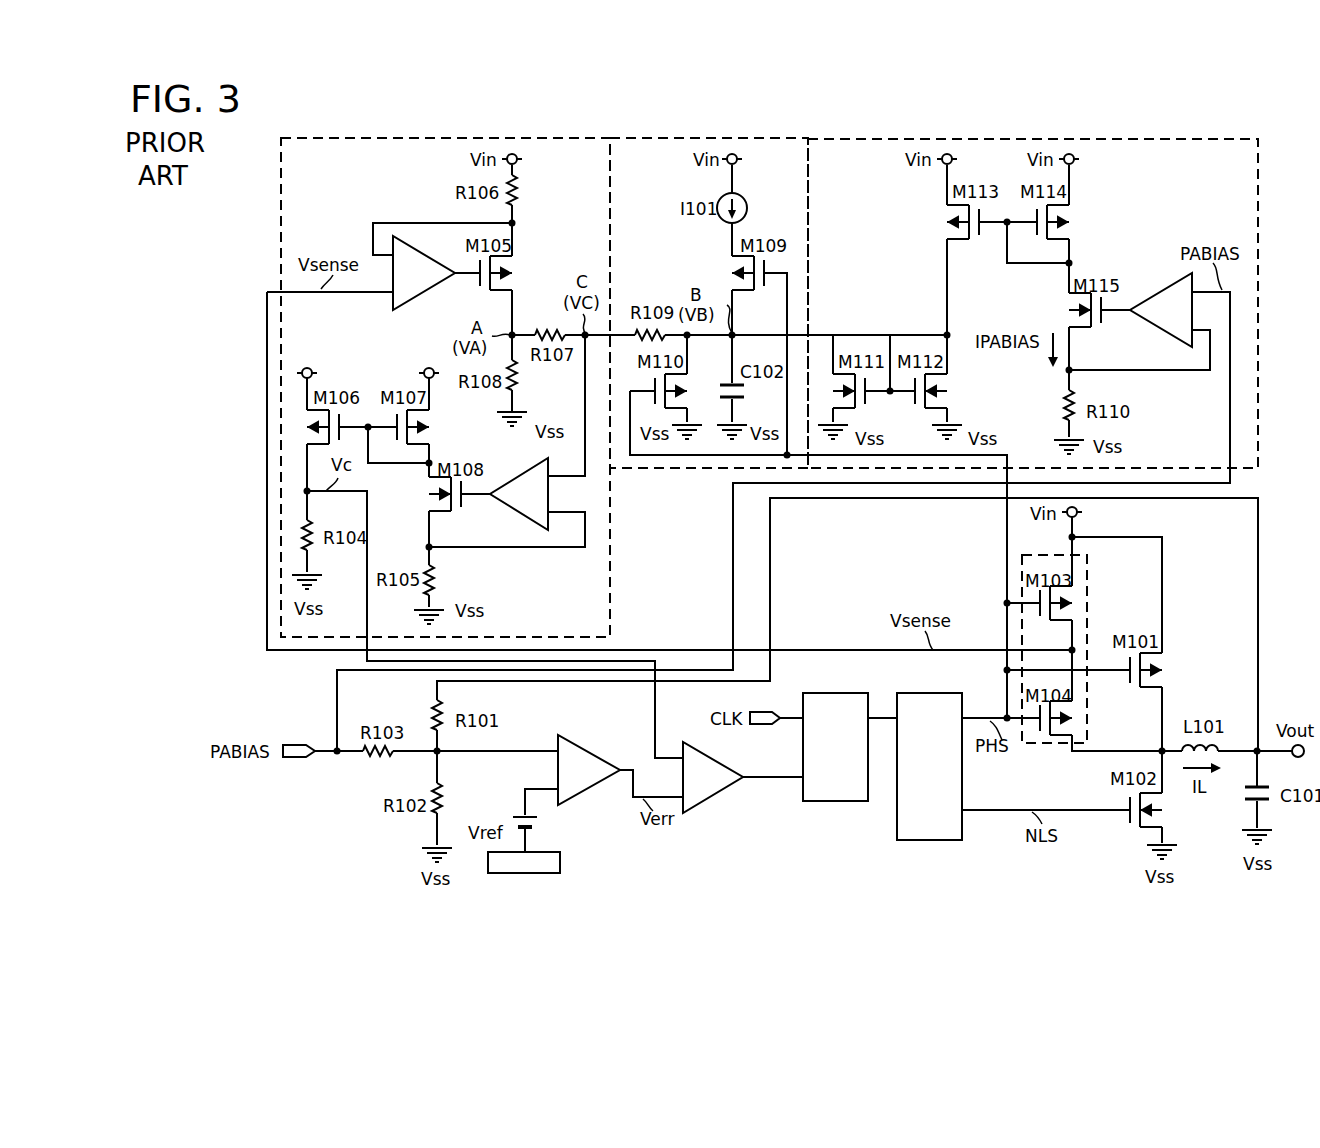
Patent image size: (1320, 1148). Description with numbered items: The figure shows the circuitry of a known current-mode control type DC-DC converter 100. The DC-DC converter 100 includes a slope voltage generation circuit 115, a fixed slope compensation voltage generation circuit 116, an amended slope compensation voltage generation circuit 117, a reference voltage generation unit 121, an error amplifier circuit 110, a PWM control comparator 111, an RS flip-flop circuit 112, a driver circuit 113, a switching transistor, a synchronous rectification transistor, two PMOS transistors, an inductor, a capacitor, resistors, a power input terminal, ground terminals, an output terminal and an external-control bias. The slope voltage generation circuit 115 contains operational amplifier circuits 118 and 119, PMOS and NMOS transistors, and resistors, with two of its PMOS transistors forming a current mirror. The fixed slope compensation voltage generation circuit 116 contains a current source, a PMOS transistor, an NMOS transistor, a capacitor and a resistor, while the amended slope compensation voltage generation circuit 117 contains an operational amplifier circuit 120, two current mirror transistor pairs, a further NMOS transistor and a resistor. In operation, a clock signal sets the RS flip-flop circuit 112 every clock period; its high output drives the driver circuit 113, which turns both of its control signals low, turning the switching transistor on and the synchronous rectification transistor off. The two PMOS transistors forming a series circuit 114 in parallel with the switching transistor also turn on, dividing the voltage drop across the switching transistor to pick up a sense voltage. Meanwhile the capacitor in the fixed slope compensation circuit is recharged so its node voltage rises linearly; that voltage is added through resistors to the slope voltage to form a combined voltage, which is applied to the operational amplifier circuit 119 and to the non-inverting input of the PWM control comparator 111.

The DC-DC converter 100 is at (846, 120).
The error amplifier circuit 110 is at (593, 726).
The PWM control comparator 111 is at (717, 797).
The RS flip-flop circuit 112 is at (847, 693).
The driver circuit 113 is at (927, 693).
The series circuit 114 is at (1088, 580).
The slope voltage generation circuit 115 is at (537, 137).
The fixed slope compensation voltage generation circuit 116 is at (756, 137).
The amended slope compensation voltage generation circuit 117 is at (1170, 137).
The operational amplifier circuit 118 is at (432, 297).
The operational amplifier circuit 119 is at (511, 472).
The operational amplifier circuit 120 is at (1155, 288).
The reference voltage generation unit 121 is at (564, 864).